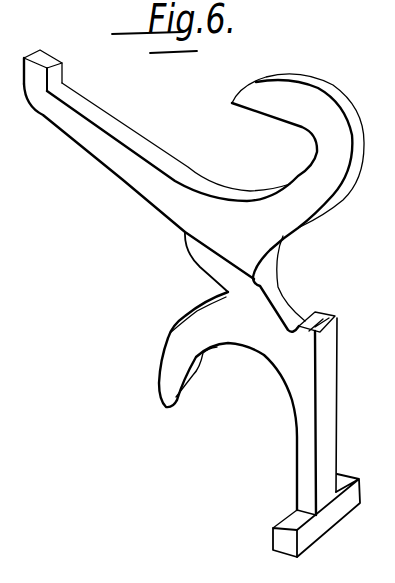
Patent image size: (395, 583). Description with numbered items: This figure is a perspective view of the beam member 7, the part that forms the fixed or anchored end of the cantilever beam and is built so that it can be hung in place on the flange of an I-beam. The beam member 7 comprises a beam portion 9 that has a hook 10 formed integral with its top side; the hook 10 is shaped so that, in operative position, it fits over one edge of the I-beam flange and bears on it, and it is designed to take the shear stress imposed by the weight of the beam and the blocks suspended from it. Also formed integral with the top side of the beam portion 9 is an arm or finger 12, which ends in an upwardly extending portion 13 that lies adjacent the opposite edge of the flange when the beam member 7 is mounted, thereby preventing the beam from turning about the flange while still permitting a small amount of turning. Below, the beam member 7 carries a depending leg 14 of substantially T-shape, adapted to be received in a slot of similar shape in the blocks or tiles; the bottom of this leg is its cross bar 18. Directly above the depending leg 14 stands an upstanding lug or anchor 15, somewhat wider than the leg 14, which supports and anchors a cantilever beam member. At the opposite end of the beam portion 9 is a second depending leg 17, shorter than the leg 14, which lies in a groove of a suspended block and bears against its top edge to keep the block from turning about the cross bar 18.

The beam member 7 is at (364, 372).
The beam portion 9 is at (251, 335).
The hook 10 is at (357, 131).
The arm or finger 12 is at (128, 131).
The upwardly extending portion 13 is at (66, 68).
The depending leg 14 is at (343, 413).
The upstanding lug or anchor 15 is at (325, 312).
The depending leg 17 is at (175, 398).
The cross bar 18 is at (322, 524).